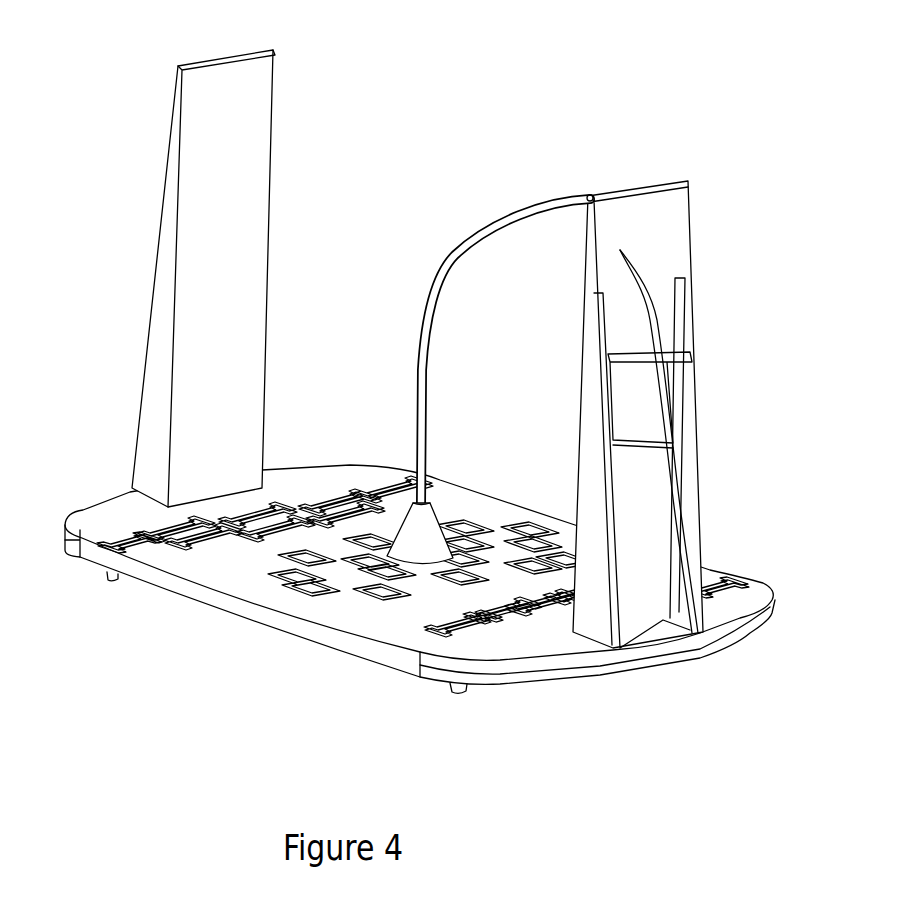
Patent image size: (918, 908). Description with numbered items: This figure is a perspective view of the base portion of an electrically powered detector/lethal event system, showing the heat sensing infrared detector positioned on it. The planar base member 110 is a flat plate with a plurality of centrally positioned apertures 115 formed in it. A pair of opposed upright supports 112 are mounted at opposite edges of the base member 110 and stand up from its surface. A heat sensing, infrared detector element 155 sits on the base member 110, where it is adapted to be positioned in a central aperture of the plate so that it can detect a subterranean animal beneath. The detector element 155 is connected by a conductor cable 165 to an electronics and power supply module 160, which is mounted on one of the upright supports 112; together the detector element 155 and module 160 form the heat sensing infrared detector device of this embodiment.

The planar base member 110 is at (100, 556).
The upright supports 112 is at (233, 137).
The centrally positioned apertures 115 is at (300, 592).
The heat sensing infrared detector element 155 is at (425, 552).
The electronics and power supply module 160 is at (622, 420).
The conductor cable 165 is at (427, 293).